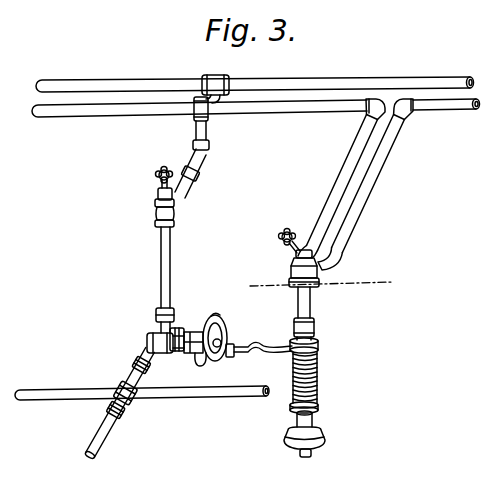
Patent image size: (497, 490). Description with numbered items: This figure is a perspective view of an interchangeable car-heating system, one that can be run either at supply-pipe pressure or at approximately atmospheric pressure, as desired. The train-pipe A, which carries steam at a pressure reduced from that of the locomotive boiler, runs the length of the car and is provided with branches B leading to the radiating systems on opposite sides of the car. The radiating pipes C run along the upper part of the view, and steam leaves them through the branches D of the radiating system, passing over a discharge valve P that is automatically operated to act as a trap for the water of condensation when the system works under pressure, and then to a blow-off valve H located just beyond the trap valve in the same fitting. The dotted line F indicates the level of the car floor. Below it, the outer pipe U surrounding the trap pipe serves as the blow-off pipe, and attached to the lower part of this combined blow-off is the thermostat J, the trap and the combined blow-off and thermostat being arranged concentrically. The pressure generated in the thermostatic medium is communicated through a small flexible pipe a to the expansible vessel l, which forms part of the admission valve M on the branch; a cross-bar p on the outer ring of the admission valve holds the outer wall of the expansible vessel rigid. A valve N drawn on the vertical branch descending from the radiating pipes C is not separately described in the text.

The radiating pipes C is at (134, 88).
The branches of the radiating system D is at (368, 197).
The valve N is at (158, 207).
The admission valve M is at (152, 331).
The branches B is at (141, 354).
The train-pipe A is at (237, 390).
The blow-off valve H is at (287, 250).
The discharge valve P is at (319, 268).
The dotted line F is at (387, 276).
The outer pipe U is at (305, 302).
The thermostat J is at (317, 381).
The expansible vessel l is at (221, 329).
The cross-bar p is at (228, 331).
The flexible pipe a is at (252, 349).